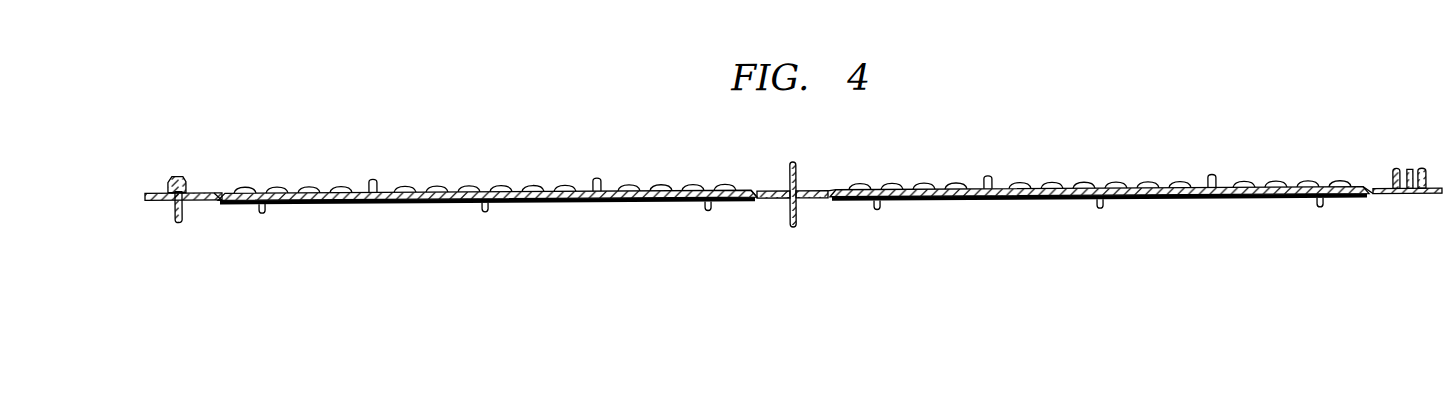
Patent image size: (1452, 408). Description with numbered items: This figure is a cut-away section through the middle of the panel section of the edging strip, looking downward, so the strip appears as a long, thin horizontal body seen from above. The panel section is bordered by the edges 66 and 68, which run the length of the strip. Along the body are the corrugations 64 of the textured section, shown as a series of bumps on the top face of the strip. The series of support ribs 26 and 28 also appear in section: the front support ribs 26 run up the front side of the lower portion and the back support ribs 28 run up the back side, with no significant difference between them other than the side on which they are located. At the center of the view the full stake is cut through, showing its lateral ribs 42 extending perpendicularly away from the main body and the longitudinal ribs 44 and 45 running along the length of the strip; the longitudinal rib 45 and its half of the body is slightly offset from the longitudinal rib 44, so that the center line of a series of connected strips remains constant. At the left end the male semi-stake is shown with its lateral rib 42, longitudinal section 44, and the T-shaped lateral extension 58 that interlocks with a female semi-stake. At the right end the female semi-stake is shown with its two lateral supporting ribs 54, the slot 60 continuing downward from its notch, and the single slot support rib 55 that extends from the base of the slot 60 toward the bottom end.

The front support ribs 26 is at (263, 211).
The back support ribs 28 is at (370, 177).
The lateral ribs 42 is at (790, 162).
The longitudinal rib 44 is at (158, 193).
The longitudinal rib 45 is at (812, 190).
The lateral supporting ribs 54 is at (1393, 176).
The slot support rib 55 is at (1410, 174).
The lateral extension 58 is at (172, 174).
The slot 60 is at (1440, 199).
The corrugations 64 is at (437, 184).
The edge 66 is at (218, 198).
The edge 68 is at (568, 202).